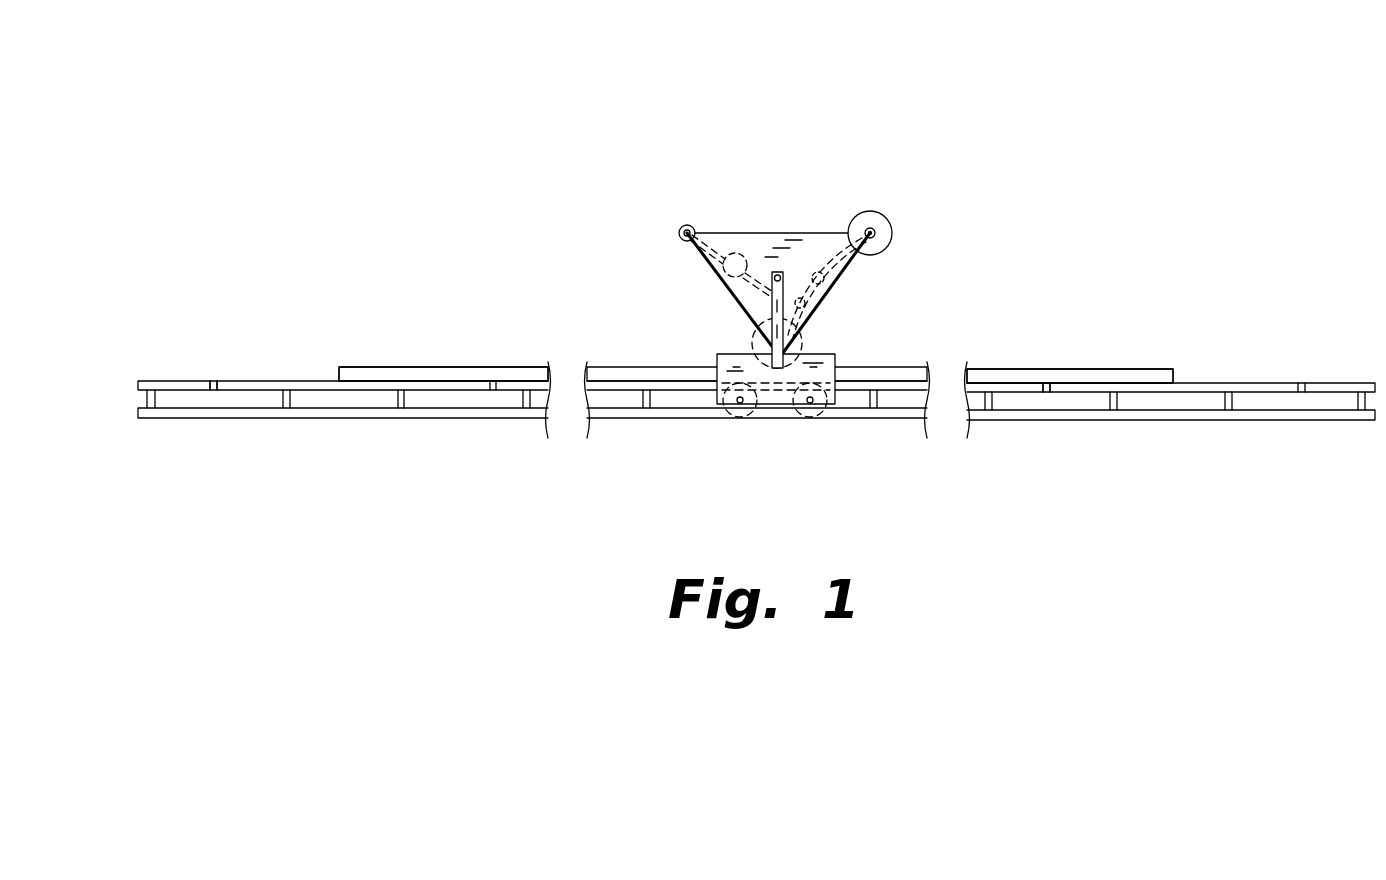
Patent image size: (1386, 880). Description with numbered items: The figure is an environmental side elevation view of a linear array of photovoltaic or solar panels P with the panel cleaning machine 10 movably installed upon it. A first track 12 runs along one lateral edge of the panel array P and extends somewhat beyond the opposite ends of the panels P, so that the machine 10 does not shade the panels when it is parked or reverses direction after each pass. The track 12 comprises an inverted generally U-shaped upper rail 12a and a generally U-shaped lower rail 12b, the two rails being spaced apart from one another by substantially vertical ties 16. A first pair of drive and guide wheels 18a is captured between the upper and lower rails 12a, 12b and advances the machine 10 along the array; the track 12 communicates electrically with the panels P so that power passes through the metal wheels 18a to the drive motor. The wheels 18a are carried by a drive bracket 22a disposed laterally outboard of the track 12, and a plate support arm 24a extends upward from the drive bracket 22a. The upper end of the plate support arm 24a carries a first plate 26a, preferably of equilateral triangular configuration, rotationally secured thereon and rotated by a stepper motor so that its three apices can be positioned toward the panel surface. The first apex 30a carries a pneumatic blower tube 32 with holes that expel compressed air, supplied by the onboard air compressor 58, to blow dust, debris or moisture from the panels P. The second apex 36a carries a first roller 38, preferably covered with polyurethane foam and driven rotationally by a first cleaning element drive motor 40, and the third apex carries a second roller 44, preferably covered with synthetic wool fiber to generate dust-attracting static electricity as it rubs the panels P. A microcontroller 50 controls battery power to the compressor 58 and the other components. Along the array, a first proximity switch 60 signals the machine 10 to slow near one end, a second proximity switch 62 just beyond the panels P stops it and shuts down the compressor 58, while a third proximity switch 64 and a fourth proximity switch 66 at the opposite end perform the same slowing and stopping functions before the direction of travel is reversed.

The panel cleaning machine 10 is at (551, 117).
The first track 12 is at (756, 403).
The upper rail 12a is at (282, 380).
The lower rail 12b is at (330, 420).
The vertical ties 16 is at (522, 397).
The first pair of drive and guide wheels 18a is at (788, 420).
The drive bracket 22a is at (838, 354).
The plate support arm 24a is at (770, 316).
The first plate 26a is at (757, 233).
The first apex 30a is at (680, 226).
The pneumatic blower tube 32 is at (678, 235).
The second apex 36a is at (868, 212).
The first roller 38 is at (887, 215).
The first cleaning element drive motor 40 is at (892, 236).
The second roller 44 is at (752, 338).
The microcontroller 50 is at (835, 283).
The air compressor 58 is at (723, 270).
The first proximity switch 60 is at (1043, 385).
The second proximity switch 62 is at (1302, 383).
The third proximity switch 64 is at (495, 380).
The fourth proximity switch 66 is at (215, 380).
The photovoltaic panels P is at (357, 367).